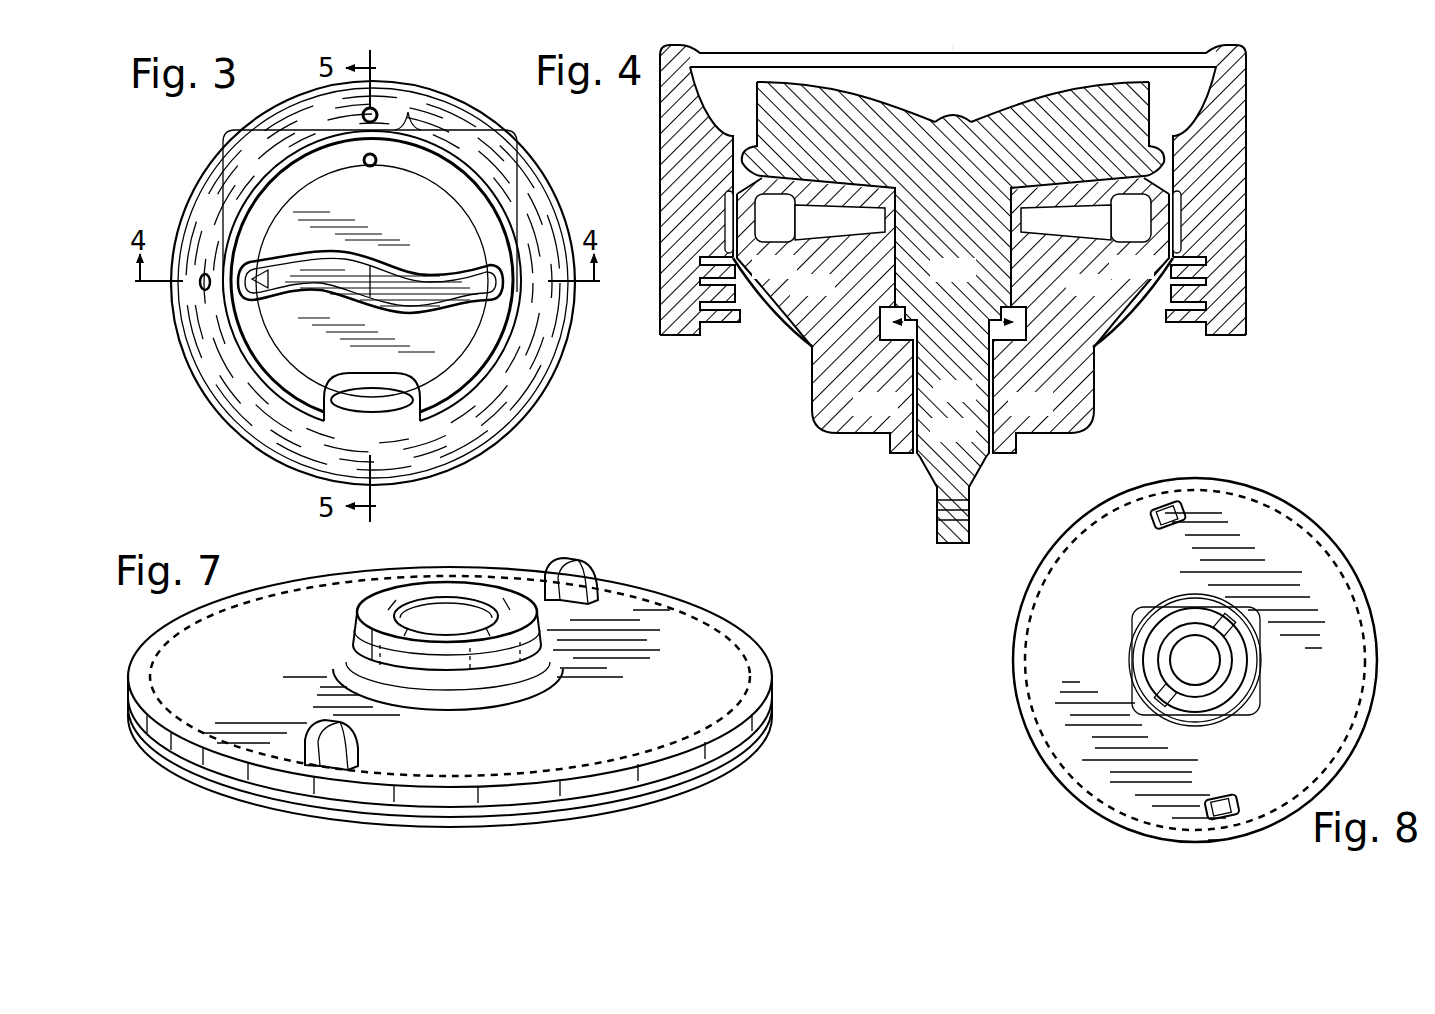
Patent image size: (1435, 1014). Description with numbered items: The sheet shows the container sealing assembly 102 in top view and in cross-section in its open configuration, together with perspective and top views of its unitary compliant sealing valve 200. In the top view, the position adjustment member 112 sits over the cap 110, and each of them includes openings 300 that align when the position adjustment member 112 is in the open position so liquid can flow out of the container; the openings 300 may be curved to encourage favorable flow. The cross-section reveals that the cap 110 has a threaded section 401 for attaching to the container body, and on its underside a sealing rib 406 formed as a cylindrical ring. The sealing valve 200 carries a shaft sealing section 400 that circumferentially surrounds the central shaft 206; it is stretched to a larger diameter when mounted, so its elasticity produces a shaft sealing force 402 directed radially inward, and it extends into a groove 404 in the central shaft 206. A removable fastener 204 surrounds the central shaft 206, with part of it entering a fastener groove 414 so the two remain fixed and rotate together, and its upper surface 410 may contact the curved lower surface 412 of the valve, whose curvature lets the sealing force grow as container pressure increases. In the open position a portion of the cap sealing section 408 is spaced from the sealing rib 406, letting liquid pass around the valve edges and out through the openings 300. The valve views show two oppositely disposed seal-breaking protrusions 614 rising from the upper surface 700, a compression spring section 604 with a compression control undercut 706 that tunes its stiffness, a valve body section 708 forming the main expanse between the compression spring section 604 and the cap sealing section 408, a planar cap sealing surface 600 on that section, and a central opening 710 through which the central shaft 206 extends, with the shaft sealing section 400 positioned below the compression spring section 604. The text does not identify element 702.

In FIG. 3, the container sealing assembly 102 is at (186, 143).
In FIG. 4, the container sealing assembly 102 is at (1300, 84).
In FIG. 3, the cap 110 is at (190, 212).
In FIG. 4, the cap 110 is at (1246, 165).
In FIG. 3, the position adjustment member 112 is at (376, 96).
In FIG. 4, the position adjustment member 112 is at (953, 53).
In FIG. 4, the sealing valve 200 is at (796, 280).
In FIG. 7, the sealing valve 200 is at (468, 681).
In FIG. 8, the sealing valve 200 is at (1216, 660).
In FIG. 4, the removable fastener 204 is at (898, 416).
In FIG. 4, the central shaft 206 is at (975, 442).
In FIG. 3, the openings 300 is at (346, 388).
In FIG. 4, the shaft sealing section 400 is at (813, 353).
In FIG. 7, the shaft sealing section 400 is at (447, 700).
In FIG. 4, the threaded section 401 is at (706, 300).
In FIG. 4, the shaft sealing force 402 is at (910, 335).
In FIG. 4, the groove 404 is at (995, 312).
In FIG. 4, the sealing rib 406 is at (722, 215).
In FIG. 4, the cap sealing section 408 is at (728, 288).
In FIG. 7, the cap sealing section 408 is at (765, 670).
In FIG. 8, the cap sealing section 408 is at (1373, 663).
In FIG. 4, the upper surface 410 is at (949, 312).
In FIG. 4, the lower surface 412 is at (813, 376).
In FIG. 4, the fastener groove 414 is at (935, 330).
In FIG. 7, the cap sealing surface 600 is at (752, 648).
In FIG. 7, the compression spring section 604 is at (432, 665).
In FIG. 8, the compression spring section 604 is at (1124, 670).
In FIG. 7, the seal-breaking protrusions 614 is at (600, 574).
In FIG. 8, the seal-breaking protrusions 614 is at (1150, 516).
In FIG. 7, the upper surface 700 is at (180, 665).
In FIG. 7, the tab 702 is at (469, 653).
In FIG. 7, the compression control undercut 706 is at (545, 672).
In FIG. 7, the valve body section 708 is at (685, 706).
In FIG. 8, the valve body section 708 is at (1330, 726).
In FIG. 7, the opening 710 is at (449, 616).